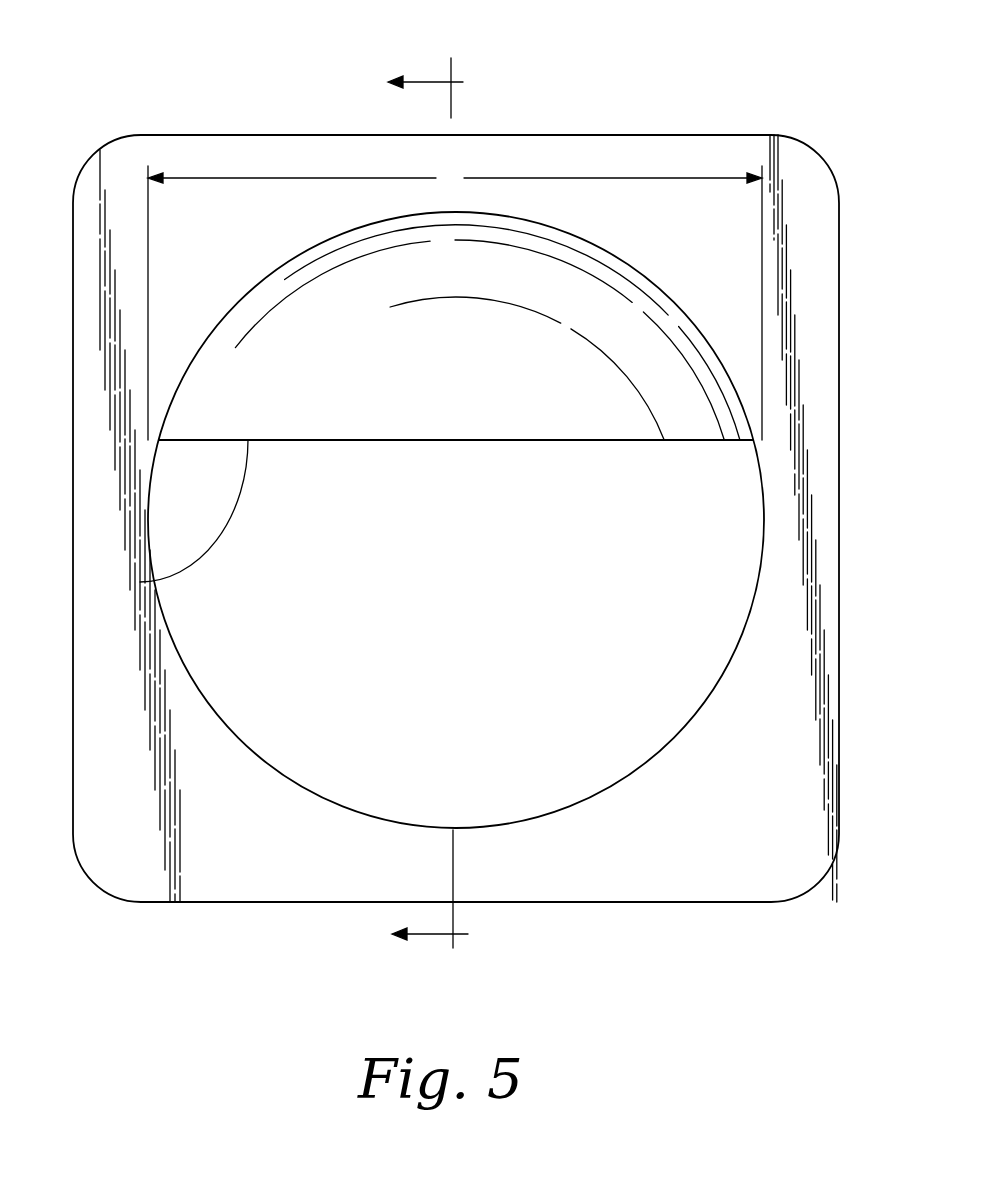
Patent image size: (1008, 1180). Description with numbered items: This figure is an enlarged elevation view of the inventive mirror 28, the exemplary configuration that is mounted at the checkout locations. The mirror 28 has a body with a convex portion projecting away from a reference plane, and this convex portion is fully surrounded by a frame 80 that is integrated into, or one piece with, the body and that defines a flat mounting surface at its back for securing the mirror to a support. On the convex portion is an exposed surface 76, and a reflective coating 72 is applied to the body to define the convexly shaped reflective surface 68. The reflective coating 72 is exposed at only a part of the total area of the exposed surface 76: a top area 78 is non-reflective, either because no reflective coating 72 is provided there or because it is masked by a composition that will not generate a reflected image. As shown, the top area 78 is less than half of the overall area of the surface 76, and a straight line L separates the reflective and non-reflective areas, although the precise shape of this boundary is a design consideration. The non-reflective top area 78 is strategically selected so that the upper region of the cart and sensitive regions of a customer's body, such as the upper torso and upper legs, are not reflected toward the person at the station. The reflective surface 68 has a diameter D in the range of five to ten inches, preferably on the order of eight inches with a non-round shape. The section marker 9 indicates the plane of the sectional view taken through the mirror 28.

The mirror 28 is at (613, 808).
The reflective surface 68 is at (398, 520).
The reflective coating 72 is at (673, 683).
The exposed surface 76 is at (723, 504).
The top area 78 is at (537, 292).
The frame 80 is at (252, 828).
The section line 9- 9 is at (438, 503).
The diameter D is at (455, 303).
The straight line L is at (140, 582).